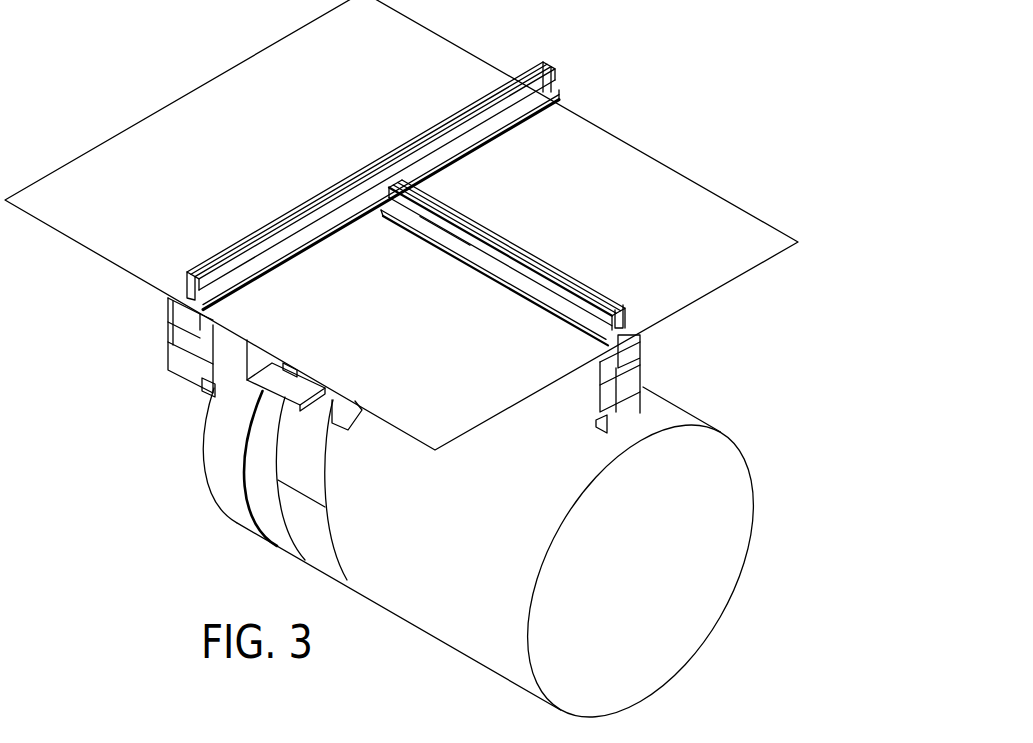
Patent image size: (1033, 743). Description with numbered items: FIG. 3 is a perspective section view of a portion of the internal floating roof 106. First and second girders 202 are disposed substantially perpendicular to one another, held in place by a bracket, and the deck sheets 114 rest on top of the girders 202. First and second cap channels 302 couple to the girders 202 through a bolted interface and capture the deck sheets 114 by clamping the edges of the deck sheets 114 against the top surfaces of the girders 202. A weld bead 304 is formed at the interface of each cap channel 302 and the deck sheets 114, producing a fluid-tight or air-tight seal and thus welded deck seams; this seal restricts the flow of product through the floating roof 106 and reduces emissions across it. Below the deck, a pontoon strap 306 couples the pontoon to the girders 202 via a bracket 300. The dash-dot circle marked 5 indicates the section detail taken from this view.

The internal floating roof 106 is at (158, 58).
The deck sheets 114 is at (431, 26).
The cap channels 302 is at (556, 84).
The weld bead 304 is at (424, 246).
The girders 202 is at (643, 349).
The bracket 300 is at (245, 398).
The pontoon strap 306 is at (240, 402).
The section line FIG. 5 is at (226, 401).